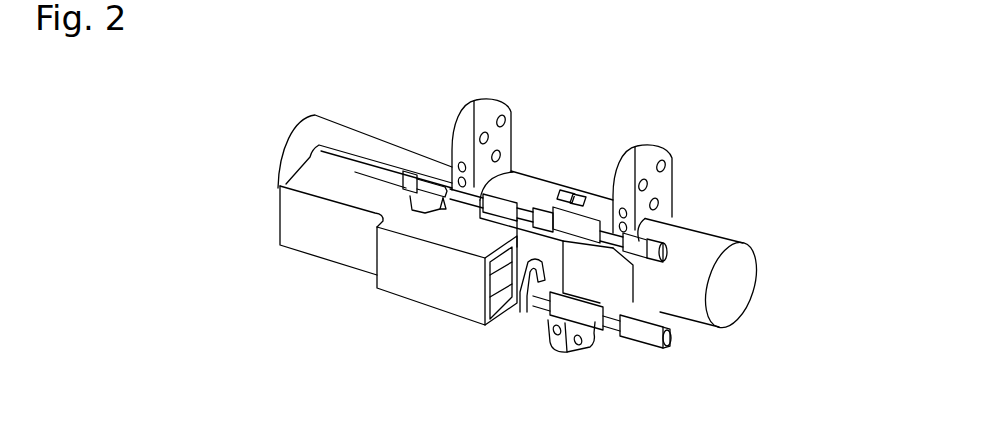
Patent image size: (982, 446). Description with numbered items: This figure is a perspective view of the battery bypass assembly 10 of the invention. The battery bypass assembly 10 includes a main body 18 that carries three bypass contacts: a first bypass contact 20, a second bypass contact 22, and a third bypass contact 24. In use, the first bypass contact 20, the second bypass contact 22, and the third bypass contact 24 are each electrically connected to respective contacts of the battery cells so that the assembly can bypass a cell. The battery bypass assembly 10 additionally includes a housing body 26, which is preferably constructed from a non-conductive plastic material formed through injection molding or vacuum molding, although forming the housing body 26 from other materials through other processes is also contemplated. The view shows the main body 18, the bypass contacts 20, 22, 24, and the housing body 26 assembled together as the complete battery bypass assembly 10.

The battery bypass assembly 10 is at (787, 210).
The main body 18 is at (302, 117).
The first bypass contact 20 is at (665, 152).
The second bypass contact 22 is at (557, 349).
The third bypass contact 24 is at (473, 101).
The housing body 26 is at (535, 188).